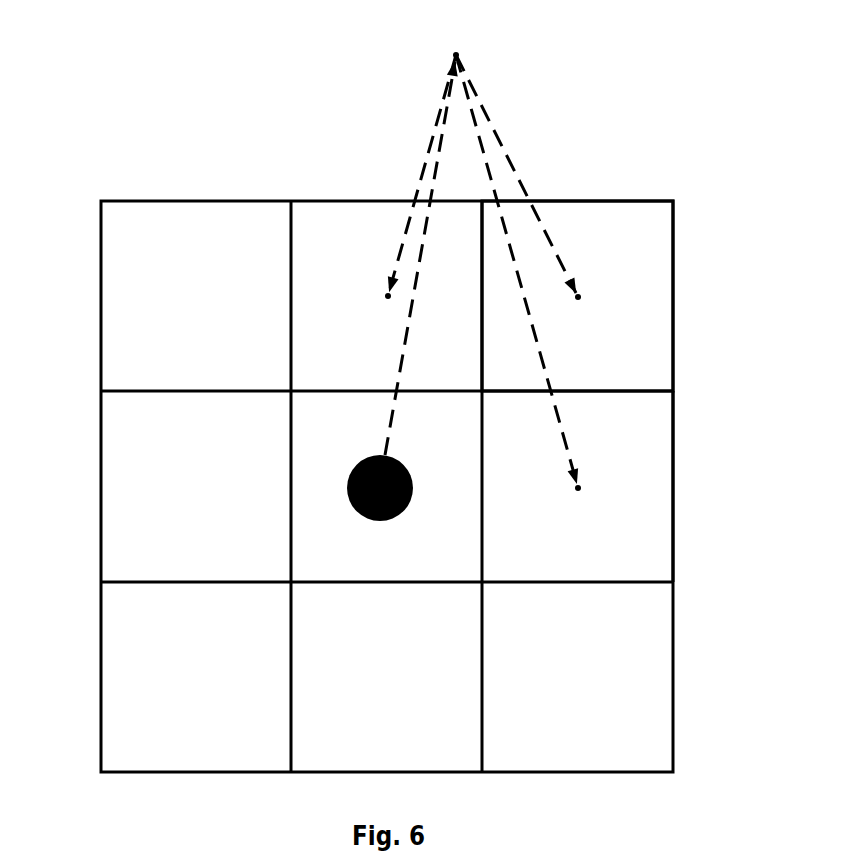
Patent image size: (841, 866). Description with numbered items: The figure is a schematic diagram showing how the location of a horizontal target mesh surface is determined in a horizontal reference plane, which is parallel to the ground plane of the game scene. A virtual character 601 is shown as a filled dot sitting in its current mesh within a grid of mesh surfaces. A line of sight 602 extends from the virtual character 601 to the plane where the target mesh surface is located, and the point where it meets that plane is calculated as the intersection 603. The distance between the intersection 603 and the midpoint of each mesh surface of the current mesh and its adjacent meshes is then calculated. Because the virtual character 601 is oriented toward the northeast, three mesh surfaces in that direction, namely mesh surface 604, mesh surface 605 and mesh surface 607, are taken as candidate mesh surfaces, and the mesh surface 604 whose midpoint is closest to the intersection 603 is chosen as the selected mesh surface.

The virtual character 601 is at (350, 479).
The line of sight 602 is at (410, 323).
The intersection 603 is at (483, 260).
The mesh surface 604 is at (328, 199).
The mesh surface 605 is at (622, 198).
The mesh surface 607 is at (676, 418).